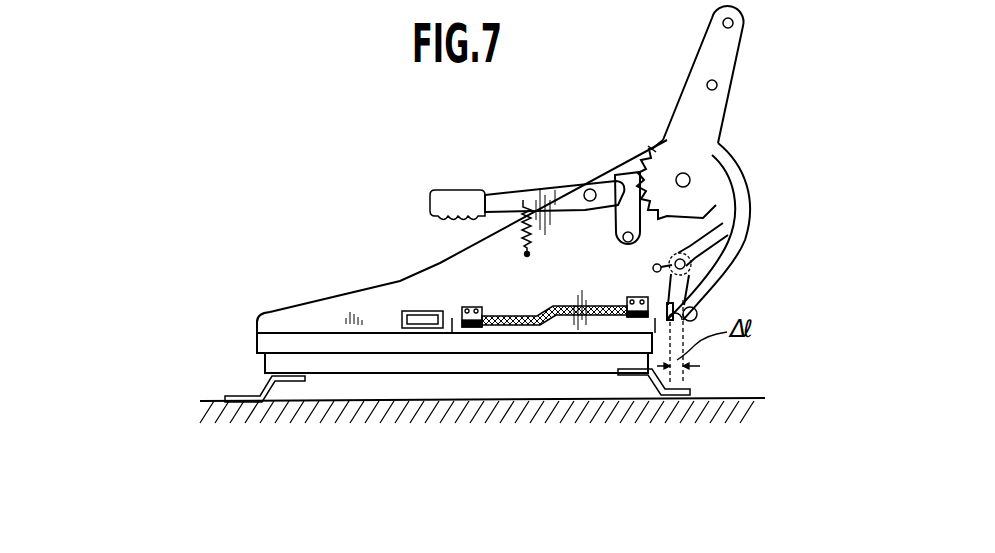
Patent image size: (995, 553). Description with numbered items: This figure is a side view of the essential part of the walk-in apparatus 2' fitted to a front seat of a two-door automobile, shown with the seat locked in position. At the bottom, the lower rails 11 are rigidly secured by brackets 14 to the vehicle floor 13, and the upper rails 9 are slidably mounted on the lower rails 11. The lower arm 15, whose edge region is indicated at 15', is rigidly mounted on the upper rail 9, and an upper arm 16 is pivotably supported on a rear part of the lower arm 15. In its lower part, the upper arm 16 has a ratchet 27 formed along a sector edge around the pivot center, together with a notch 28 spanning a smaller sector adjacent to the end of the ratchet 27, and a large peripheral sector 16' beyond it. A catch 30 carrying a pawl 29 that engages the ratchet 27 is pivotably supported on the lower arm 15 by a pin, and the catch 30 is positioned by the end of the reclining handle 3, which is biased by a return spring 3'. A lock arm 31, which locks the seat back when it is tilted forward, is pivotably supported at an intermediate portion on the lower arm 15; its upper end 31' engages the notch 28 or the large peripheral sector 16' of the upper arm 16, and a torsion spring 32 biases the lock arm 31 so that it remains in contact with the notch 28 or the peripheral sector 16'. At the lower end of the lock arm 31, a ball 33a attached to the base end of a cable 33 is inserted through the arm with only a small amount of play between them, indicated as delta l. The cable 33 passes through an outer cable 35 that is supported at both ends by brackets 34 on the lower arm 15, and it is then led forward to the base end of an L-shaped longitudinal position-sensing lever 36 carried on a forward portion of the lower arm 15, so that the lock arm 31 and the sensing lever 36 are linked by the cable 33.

The walk-in apparatus 2' is at (768, 258).
The reclining handle 3 is at (554, 161).
The return spring 3' is at (471, 165).
The upper rails 9 is at (395, 345).
The lower rails 11 is at (345, 363).
The vehicle floor 13 is at (522, 403).
The brackets 14 is at (237, 395).
The lower arm 15 is at (454, 288).
The cover edge 15' is at (468, 235).
The upper arm 16 is at (746, 74).
The large peripheral sector 16' is at (750, 231).
The ratchet 27 is at (653, 147).
The notch 28 is at (713, 180).
The pawl 29 is at (628, 218).
The catch 30 is at (597, 182).
The lock arm 31 is at (740, 248).
The upper end of lock arm 31' is at (738, 233).
The torsion spring 32 is at (693, 266).
The cable 33 is at (452, 322).
The ball 33a is at (697, 307).
The brackets 34 is at (470, 307).
The outer cable 35 is at (500, 322).
The longitudinal position-sensing lever 36 is at (420, 317).